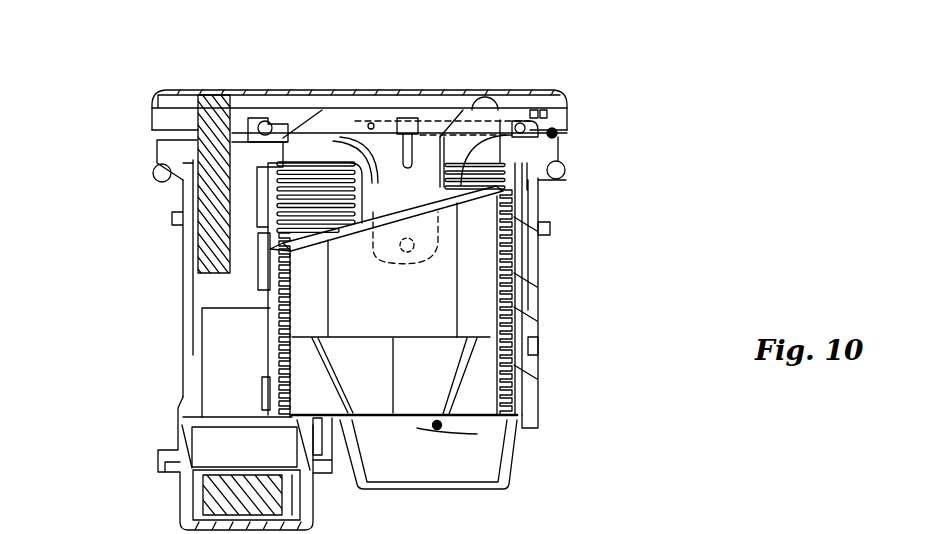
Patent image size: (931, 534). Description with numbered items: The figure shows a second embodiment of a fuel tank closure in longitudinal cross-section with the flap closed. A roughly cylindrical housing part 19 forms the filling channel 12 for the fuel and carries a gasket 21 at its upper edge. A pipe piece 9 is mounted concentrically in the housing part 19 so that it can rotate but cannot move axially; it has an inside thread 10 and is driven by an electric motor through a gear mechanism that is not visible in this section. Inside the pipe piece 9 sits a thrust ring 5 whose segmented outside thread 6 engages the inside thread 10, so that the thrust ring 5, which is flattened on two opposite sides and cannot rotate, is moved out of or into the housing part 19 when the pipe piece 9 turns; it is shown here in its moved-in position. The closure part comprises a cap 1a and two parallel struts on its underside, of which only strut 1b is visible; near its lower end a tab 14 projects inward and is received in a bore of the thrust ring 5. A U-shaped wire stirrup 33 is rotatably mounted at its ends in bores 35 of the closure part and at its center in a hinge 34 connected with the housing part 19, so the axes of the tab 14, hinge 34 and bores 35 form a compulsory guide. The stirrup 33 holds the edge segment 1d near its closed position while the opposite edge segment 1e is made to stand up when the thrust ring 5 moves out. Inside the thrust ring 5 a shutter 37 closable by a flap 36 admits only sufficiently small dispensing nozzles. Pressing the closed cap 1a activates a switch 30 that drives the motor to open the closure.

The cap 1a is at (463, 90).
The strut 1b is at (407, 200).
The edge segment 1d is at (560, 97).
The edge segment 1e is at (152, 103).
The thrust ring 5 is at (483, 267).
The outside thread 6 is at (512, 385).
The pipe piece 9 is at (513, 203).
The inside thread 10 is at (490, 175).
The filling channel 12 is at (395, 314).
The tab 14 is at (412, 245).
The housing part 19 is at (532, 292).
The gasket 21 is at (267, 127).
The switch 30 is at (208, 110).
The wire stirrup 33 is at (418, 120).
The hinge 34 is at (556, 133).
The bores 35 is at (372, 126).
The flap 36 is at (440, 427).
The shutter 37 is at (505, 407).